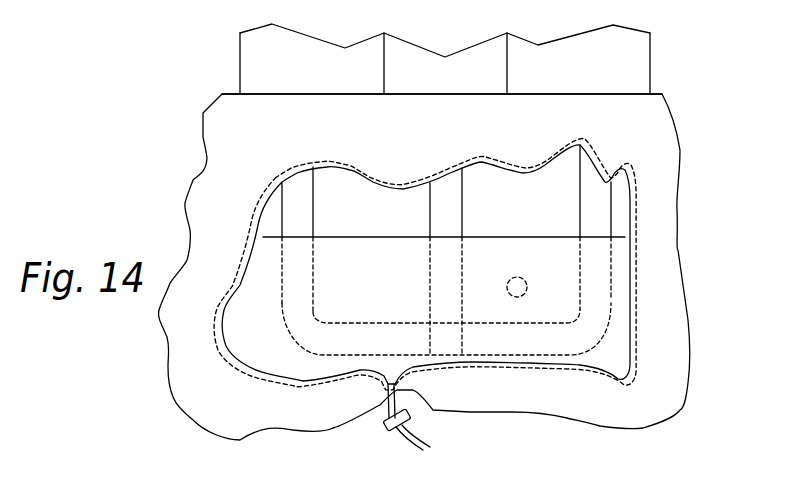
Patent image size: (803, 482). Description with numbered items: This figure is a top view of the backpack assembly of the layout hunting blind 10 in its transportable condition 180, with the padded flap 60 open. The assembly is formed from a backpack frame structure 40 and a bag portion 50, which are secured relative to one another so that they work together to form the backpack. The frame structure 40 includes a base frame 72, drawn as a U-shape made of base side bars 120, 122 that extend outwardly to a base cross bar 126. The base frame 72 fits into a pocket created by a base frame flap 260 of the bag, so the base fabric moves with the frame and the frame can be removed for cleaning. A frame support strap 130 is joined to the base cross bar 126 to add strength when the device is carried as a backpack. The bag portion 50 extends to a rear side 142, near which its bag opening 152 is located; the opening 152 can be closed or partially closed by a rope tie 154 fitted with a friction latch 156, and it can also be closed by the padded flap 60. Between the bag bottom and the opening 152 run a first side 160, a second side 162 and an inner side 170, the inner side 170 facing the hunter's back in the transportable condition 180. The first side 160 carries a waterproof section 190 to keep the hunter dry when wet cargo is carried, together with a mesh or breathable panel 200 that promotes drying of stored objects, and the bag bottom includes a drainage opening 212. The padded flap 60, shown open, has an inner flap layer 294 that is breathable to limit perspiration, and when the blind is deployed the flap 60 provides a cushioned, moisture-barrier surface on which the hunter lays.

The layout hunting blind 10 is at (695, 136).
The backpack frame structure 40 is at (609, 223).
The bag portion 50 is at (702, 355).
The padded flap 60 is at (472, 48).
The base frame 72 is at (278, 217).
The base side bar 120 is at (302, 207).
The base side bar 122 is at (590, 207).
The base cross bar 126 is at (352, 344).
The frame support strap 130 is at (448, 210).
The rear side 142 is at (250, 130).
The bag opening 152 is at (262, 340).
The rope tie 154 is at (398, 400).
The friction latch 156 is at (388, 422).
The first side 160 is at (206, 170).
The second side 162 is at (678, 227).
The inner side 170 is at (622, 94).
The transportable condition 180 is at (714, 180).
The waterproof section 190 is at (205, 133).
The mesh or breathable panel 200 is at (198, 408).
The drainage opening 212 is at (522, 296).
The base frame flap 260 is at (400, 237).
The inner flap layer 294 is at (300, 53).